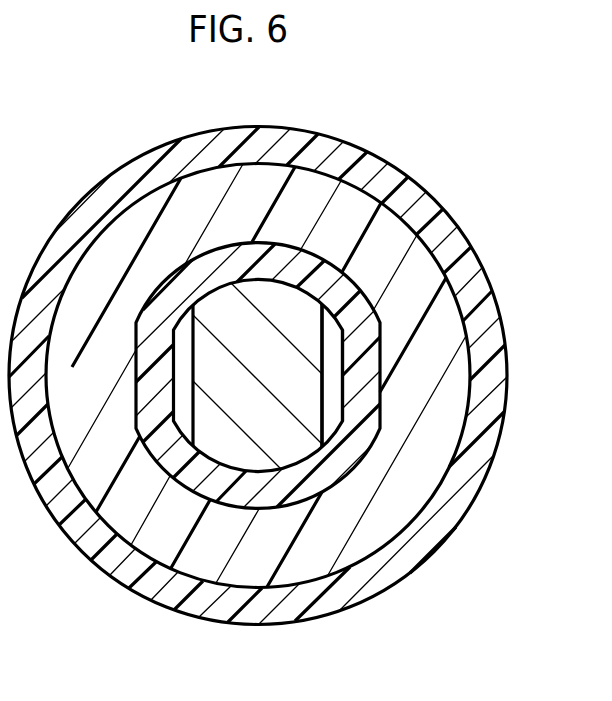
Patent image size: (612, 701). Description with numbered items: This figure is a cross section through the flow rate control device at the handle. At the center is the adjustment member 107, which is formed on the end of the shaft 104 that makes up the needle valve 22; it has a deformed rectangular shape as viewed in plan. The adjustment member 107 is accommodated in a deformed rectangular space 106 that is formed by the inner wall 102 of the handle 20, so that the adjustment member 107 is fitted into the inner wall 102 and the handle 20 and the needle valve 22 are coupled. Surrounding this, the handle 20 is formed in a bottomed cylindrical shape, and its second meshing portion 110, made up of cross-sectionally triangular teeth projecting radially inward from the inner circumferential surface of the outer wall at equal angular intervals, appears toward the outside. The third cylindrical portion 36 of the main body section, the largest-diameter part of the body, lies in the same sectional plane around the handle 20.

The handle 20 is at (428, 181).
The needle valve 22 is at (245, 453).
The third cylindrical portion 36 is at (420, 272).
The inner wall 102 is at (327, 473).
The shaft 104 is at (108, 555).
The deformed rectangular space 106 is at (328, 393).
The adjustment member 107 is at (280, 302).
The second meshing portion 110 is at (472, 462).